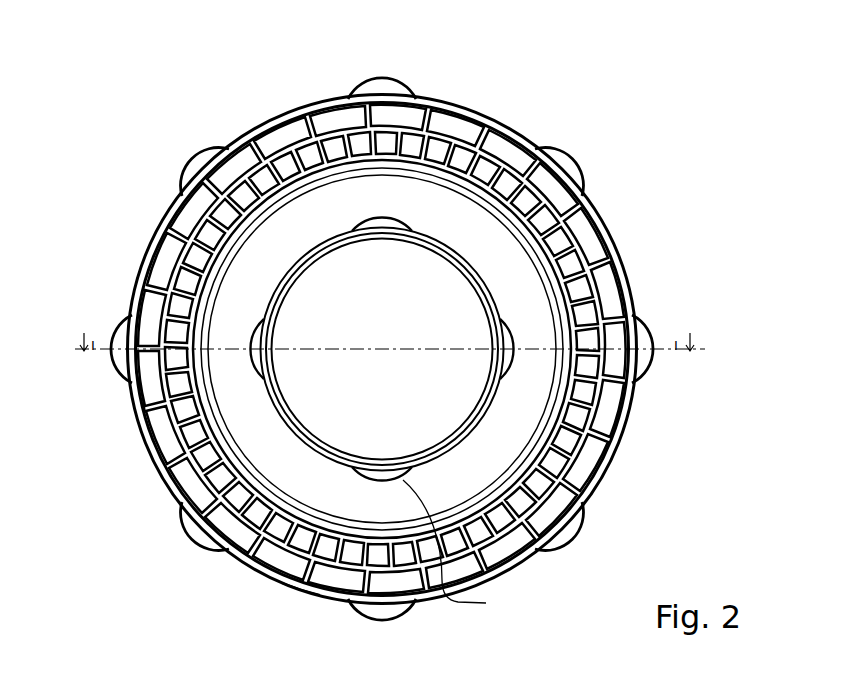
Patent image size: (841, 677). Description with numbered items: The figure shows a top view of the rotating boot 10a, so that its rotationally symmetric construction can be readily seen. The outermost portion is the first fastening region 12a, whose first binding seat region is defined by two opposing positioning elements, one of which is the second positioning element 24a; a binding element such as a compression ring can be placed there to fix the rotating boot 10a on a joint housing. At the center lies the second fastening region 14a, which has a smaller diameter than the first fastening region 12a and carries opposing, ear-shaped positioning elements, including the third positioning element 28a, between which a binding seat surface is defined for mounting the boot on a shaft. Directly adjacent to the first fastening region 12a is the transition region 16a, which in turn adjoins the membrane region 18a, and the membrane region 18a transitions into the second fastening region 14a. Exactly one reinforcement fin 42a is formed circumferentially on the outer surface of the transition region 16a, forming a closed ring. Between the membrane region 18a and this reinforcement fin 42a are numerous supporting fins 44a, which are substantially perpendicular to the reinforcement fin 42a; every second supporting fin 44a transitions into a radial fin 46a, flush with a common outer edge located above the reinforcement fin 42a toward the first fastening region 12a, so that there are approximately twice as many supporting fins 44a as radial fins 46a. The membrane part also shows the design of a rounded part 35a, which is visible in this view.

The rotating boot 10a is at (682, 136).
The first fastening region 12a is at (263, 108).
The second fastening region 14a is at (502, 291).
The transition region 16a is at (518, 132).
The membrane region 18a is at (230, 301).
The second positioning element 24a is at (392, 77).
The third positioning element 28a is at (471, 556).
The rounded part 35a is at (632, 411).
The reinforcement fin 42a is at (175, 497).
The supporting fins 44a is at (138, 381).
The radial fins 46a is at (293, 582).